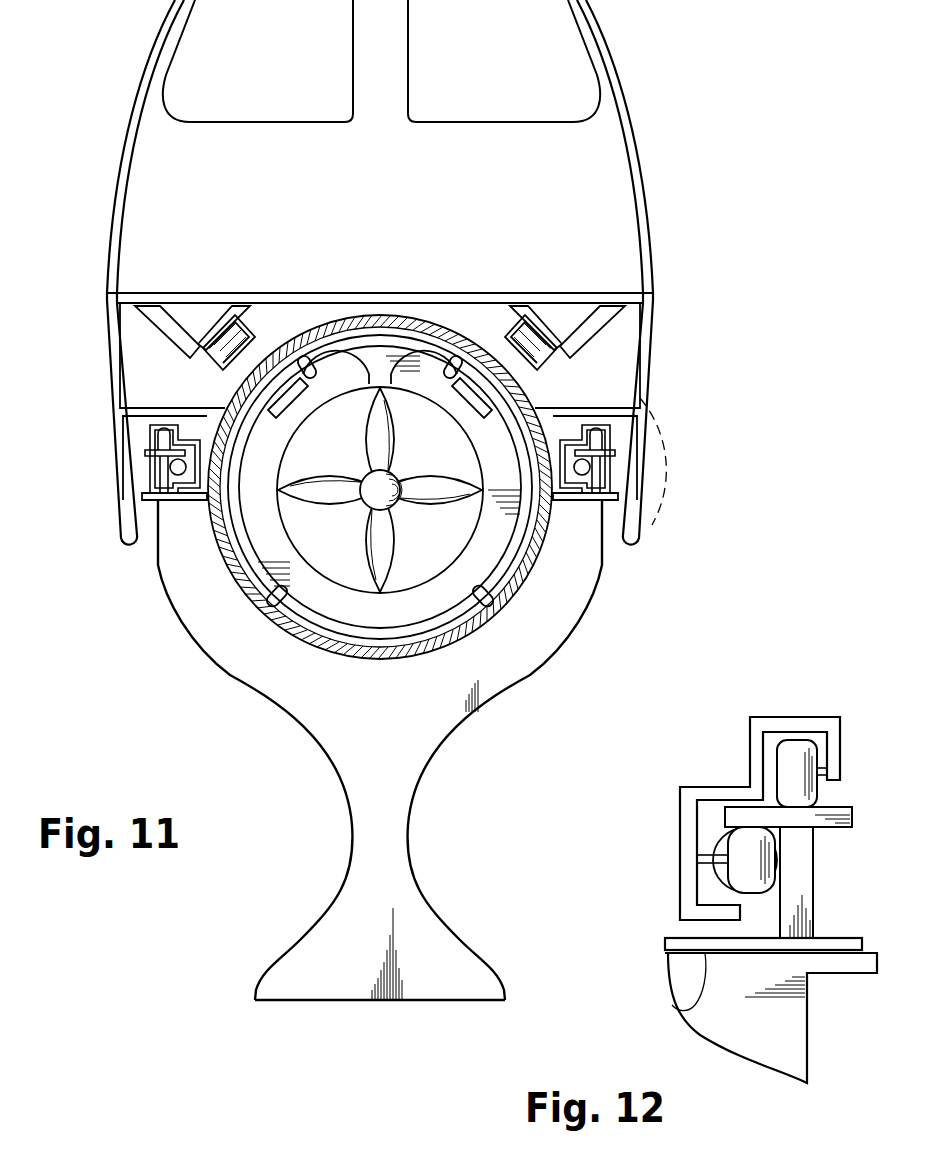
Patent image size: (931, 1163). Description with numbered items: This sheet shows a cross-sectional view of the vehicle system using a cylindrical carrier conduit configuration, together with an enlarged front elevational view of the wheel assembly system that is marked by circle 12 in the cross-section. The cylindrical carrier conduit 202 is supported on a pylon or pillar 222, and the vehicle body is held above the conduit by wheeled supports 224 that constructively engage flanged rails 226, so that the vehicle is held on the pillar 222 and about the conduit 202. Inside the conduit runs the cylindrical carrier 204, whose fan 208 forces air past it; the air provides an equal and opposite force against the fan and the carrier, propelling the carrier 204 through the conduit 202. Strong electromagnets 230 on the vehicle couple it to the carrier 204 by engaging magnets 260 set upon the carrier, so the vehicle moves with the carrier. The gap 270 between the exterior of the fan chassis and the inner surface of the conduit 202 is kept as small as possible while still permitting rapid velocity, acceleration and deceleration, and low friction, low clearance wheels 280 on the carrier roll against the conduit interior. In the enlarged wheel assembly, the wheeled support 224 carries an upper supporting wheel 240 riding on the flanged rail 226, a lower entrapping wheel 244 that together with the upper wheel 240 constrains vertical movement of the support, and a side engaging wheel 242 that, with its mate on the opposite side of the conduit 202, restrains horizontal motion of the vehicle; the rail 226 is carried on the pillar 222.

In FIG. 11, the circle 12 is at (553, 509).
In FIG. 11, the cylindrical carrier conduit 202 is at (526, 538).
In FIG. 11, the cylindrical carrier 204 is at (487, 550).
In FIG. 11, the fan 208 is at (378, 560).
In FIG. 11, the pylon or pillar 222 is at (290, 984).
In FIG. 12, the pylon or pillar 222 is at (782, 1047).
In FIG. 11, the wheeled support 224 is at (132, 456).
In FIG. 12, the wheeled support 224 is at (655, 807).
In FIG. 11, the flanged rail 226 is at (153, 478).
In FIG. 12, the flanged rail 226 is at (700, 990).
In FIG. 11, the electromagnet 230 is at (262, 340).
In FIG. 12, the upper supporting wheel 240 is at (788, 758).
In FIG. 12, the side engaging wheel 242 is at (718, 875).
In FIG. 12, the lower entrapping wheel 244 is at (743, 848).
In FIG. 11, the magnet 260 is at (366, 372).
In FIG. 11, the gap 270 is at (340, 630).
In FIG. 11, the wheel 280 is at (497, 605).